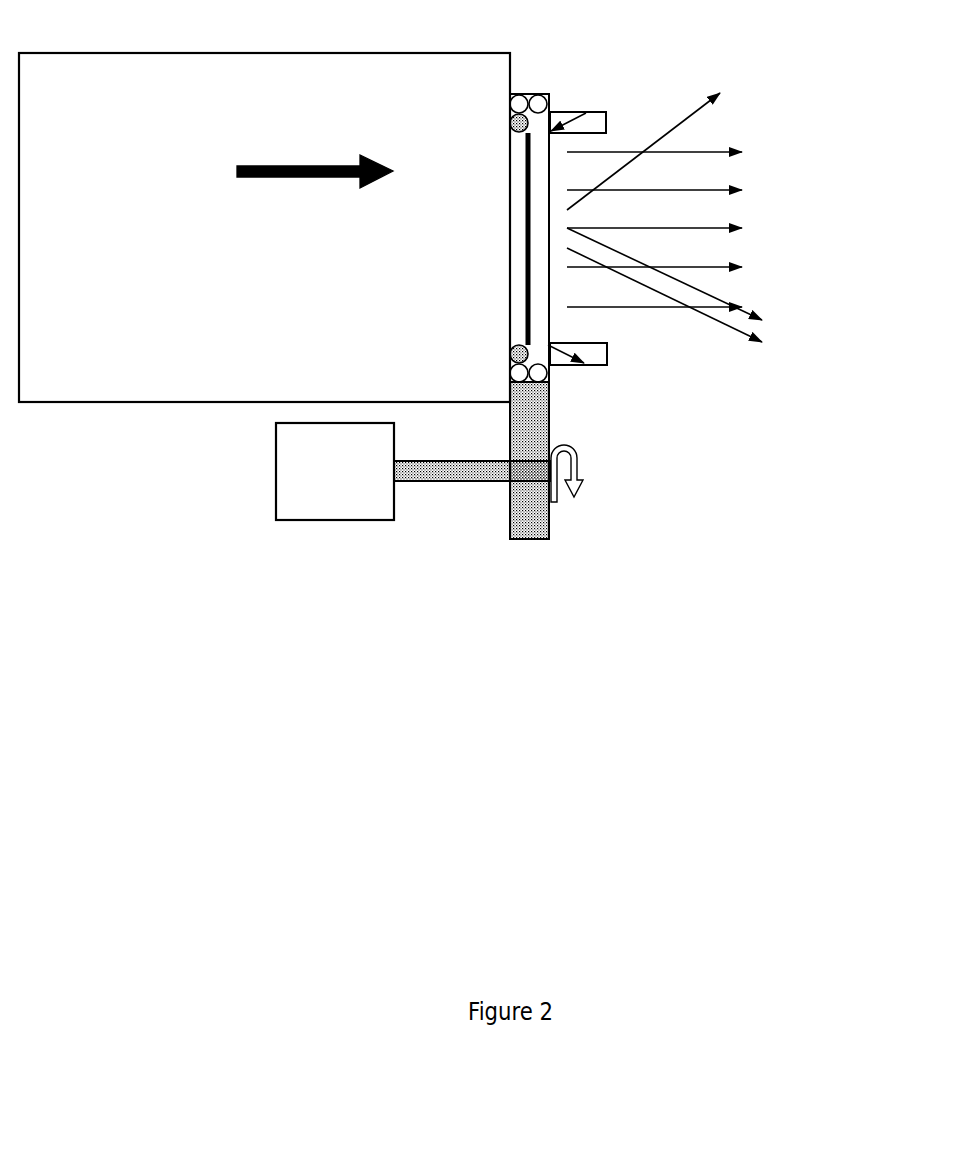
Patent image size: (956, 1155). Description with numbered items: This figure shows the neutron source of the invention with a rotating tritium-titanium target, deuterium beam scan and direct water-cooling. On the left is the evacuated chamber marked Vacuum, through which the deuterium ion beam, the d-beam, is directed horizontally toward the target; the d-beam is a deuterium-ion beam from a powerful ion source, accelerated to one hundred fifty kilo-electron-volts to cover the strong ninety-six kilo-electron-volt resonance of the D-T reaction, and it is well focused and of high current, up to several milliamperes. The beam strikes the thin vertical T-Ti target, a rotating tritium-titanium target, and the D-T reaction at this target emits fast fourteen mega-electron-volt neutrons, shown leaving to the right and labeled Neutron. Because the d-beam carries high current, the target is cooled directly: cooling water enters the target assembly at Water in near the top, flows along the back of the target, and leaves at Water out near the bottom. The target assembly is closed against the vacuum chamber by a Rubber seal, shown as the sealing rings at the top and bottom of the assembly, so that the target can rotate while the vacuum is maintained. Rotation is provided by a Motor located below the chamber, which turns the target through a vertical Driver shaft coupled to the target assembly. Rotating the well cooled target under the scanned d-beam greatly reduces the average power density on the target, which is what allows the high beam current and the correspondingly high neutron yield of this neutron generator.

The vacuum Vacuum is at (264, 227).
The element d-beam is at (265, 172).
The rubber seal Rubber seal is at (583, 204).
The element T-Ti target is at (527, 248).
The water in Water in is at (605, 108).
The water out Water out is at (612, 372).
The neutron Neutron is at (704, 217).
The driver Driver is at (552, 478).
The motor Motor is at (413, 471).